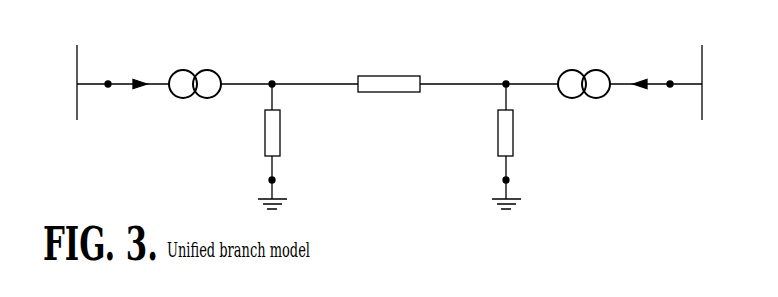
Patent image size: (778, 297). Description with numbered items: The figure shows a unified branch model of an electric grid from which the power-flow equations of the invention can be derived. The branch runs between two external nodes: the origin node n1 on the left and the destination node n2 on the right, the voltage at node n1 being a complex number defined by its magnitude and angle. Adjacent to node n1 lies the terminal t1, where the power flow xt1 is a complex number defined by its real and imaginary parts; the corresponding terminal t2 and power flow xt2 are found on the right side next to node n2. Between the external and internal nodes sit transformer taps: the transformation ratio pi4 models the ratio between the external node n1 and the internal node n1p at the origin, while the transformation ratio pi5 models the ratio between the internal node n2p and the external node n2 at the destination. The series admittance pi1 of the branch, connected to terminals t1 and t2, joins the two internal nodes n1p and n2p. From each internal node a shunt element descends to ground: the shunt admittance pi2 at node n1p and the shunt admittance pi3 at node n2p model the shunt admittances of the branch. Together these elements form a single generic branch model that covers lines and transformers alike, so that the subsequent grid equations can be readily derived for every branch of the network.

The node n1 is at (75, 101).
The terminal t1 is at (106, 103).
The power flow x_t1 xt1 is at (146, 67).
The transformation ratio pi4^BR pi4 is at (195, 107).
The internal node n1' n1p is at (270, 63).
The shunt admittance pi2^BR pi2 is at (296, 146).
The series admittance pi1^BR pi1 is at (389, 63).
The shunt admittance pi3^BR pi3 is at (479, 146).
The internal node n2' n2p is at (503, 63).
The transformation ratio pi5^BR pi5 is at (580, 107).
The power flow x_t2 xt2 is at (642, 67).
The terminal t2 is at (664, 103).
The node n2 is at (699, 101).